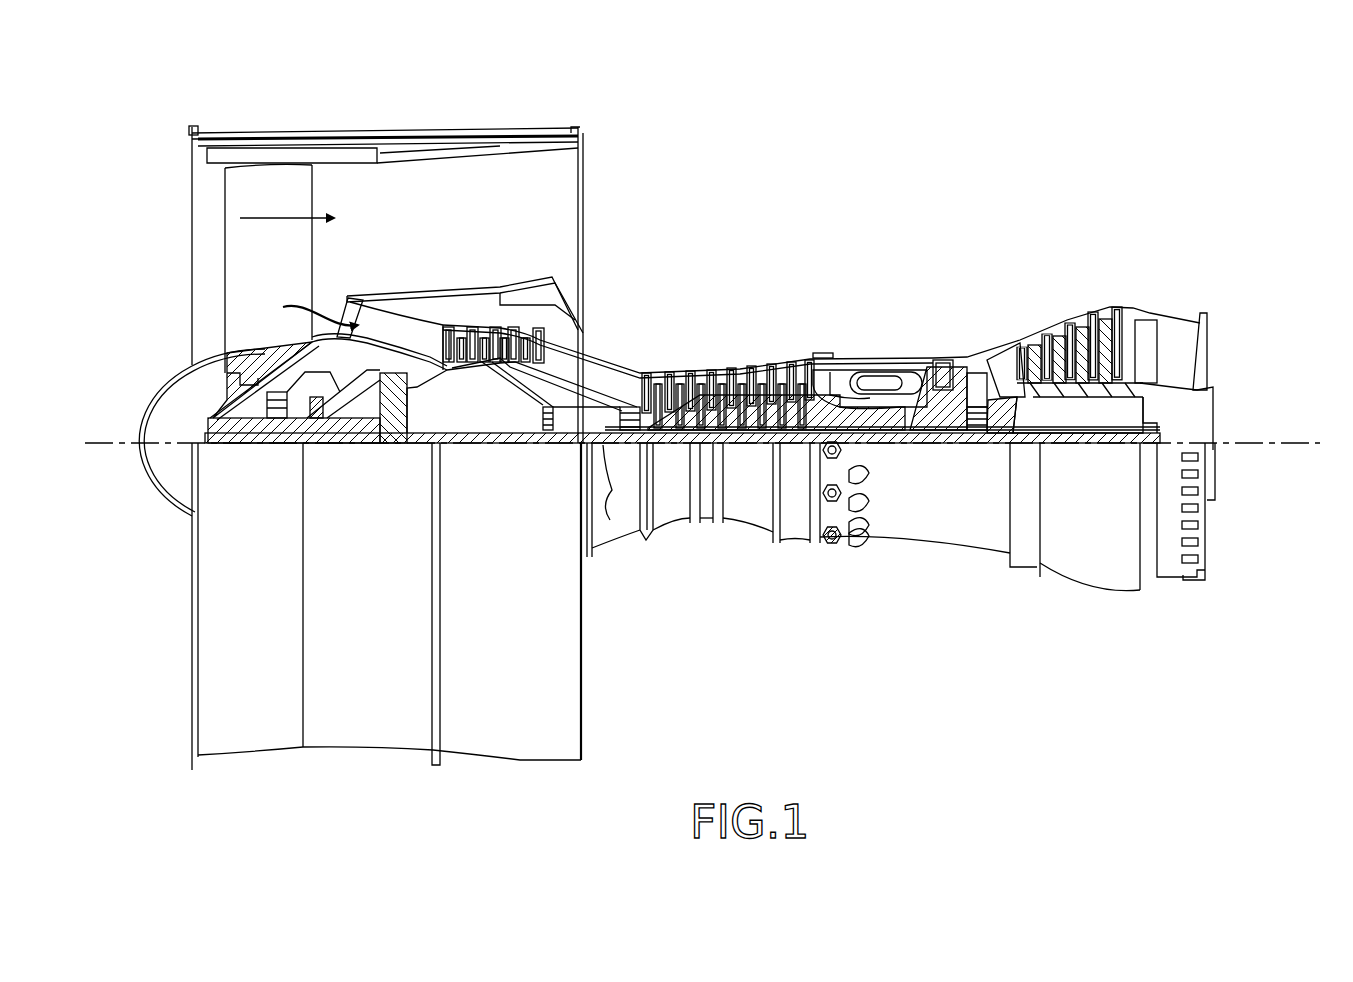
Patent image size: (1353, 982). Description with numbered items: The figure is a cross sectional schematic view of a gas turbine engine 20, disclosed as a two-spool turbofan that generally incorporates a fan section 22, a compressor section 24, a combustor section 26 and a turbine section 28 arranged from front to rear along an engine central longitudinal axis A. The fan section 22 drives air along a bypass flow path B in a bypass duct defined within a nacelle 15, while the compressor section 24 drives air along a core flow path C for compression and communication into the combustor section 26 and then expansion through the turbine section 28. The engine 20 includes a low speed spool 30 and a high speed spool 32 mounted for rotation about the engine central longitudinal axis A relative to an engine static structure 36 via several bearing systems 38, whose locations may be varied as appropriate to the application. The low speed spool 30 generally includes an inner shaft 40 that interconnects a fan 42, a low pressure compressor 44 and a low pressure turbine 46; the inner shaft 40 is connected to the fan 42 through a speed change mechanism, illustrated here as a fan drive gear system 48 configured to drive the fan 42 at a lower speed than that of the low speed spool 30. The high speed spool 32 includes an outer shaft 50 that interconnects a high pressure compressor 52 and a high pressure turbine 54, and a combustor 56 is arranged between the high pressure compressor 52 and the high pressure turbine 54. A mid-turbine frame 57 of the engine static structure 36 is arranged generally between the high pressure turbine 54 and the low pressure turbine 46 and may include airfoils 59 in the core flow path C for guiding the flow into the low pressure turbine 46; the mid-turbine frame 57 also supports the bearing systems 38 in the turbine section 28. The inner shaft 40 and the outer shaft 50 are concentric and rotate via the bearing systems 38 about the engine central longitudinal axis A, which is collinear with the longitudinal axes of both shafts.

The gas turbine engine 20 is at (905, 145).
The fan section 22 is at (303, 120).
The nacelle 15 is at (388, 148).
The fan 42 is at (279, 257).
The bypass flow path B is at (276, 218).
The core flow path C is at (308, 309).
The fan drive gear system 48 is at (395, 445).
The compressor section 24 is at (632, 330).
The low pressure compressor 44 is at (543, 338).
The high pressure compressor 52 is at (750, 368).
The high speed spool 32 is at (808, 395).
The combustor section 26 is at (877, 322).
The combustor 56 is at (884, 382).
The high pressure turbine 54 is at (938, 358).
The mid-turbine frame 57 is at (992, 342).
The turbine section 28 is at (1035, 280).
The low pressure turbine 46 is at (1080, 326).
The airfoils 59 is at (990, 380).
The outer shaft 50 is at (875, 428).
The bearing systems 38 is at (540, 443).
The inner shaft 40 is at (610, 520).
The low speed spool 30 is at (748, 443).
The engine static structure 36 is at (797, 518).
The engine central longitudinal axis A is at (1262, 443).